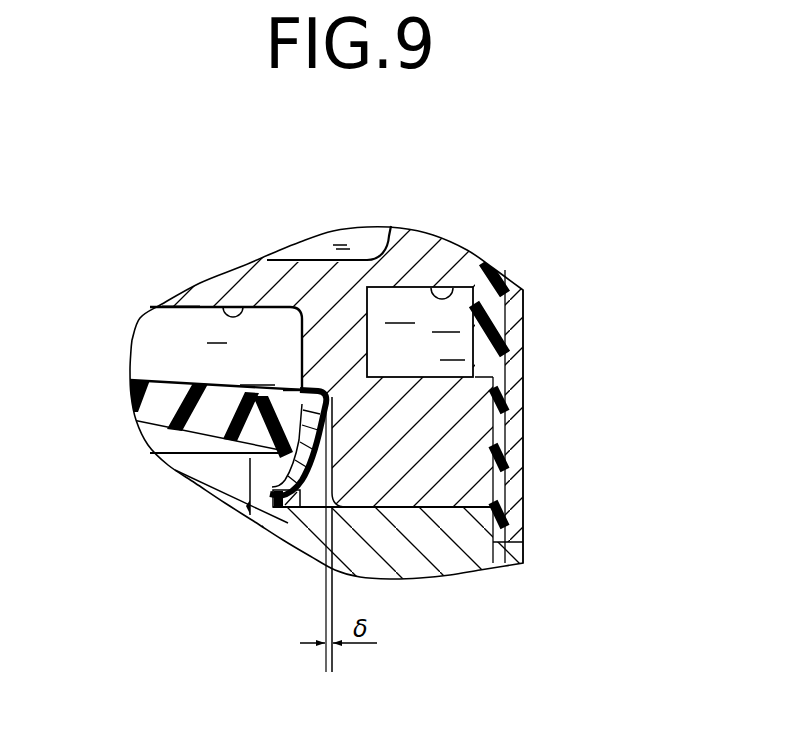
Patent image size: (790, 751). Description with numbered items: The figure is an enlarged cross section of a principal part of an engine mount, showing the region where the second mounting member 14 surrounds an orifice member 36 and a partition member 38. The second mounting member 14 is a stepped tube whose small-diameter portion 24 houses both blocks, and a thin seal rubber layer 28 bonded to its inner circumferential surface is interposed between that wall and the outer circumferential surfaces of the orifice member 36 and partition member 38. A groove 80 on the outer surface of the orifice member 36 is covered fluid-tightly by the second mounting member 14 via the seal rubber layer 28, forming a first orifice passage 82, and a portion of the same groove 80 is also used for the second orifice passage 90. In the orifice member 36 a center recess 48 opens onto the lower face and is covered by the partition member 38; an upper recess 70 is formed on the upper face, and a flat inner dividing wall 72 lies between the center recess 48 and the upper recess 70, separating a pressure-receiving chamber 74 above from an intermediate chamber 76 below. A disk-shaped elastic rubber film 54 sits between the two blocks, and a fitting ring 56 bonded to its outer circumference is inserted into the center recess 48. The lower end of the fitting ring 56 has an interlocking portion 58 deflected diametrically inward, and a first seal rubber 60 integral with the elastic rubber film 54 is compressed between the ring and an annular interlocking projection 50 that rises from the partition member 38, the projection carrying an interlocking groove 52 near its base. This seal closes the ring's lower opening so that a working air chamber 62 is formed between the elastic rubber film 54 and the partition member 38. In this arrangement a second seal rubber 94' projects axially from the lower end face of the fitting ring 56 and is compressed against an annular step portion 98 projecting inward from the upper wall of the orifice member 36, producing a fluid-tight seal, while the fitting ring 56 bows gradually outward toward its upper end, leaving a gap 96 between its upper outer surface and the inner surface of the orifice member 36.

The second mounting member 14 is at (568, 411).
The small-diameter portion 24 is at (513, 520).
The seal rubber layer 28 is at (498, 483).
The orifice member 36 is at (433, 233).
The partition member 38 is at (429, 579).
The center recess 48 is at (243, 306).
The interlocking projection 50 is at (252, 478).
The interlocking groove 52 is at (283, 500).
The elastic rubber film 54 is at (158, 408).
The fitting ring 56 is at (333, 467).
The interlocking portion 58 is at (300, 509).
The first seal rubber 60 is at (250, 503).
The working air chamber 62 is at (178, 459).
The upper recess 70 is at (378, 245).
The inner dividing wall 72 is at (210, 297).
The pressure-receiving chamber 74 is at (350, 237).
The intermediate chamber 76 is at (157, 330).
The groove 80 is at (443, 298).
The first orifice passage 82 is at (502, 332).
The second orifice passage 90 is at (433, 333).
The second seal rubber 94' is at (301, 336).
The gap 96 is at (333, 432).
The step portion 98 is at (285, 390).